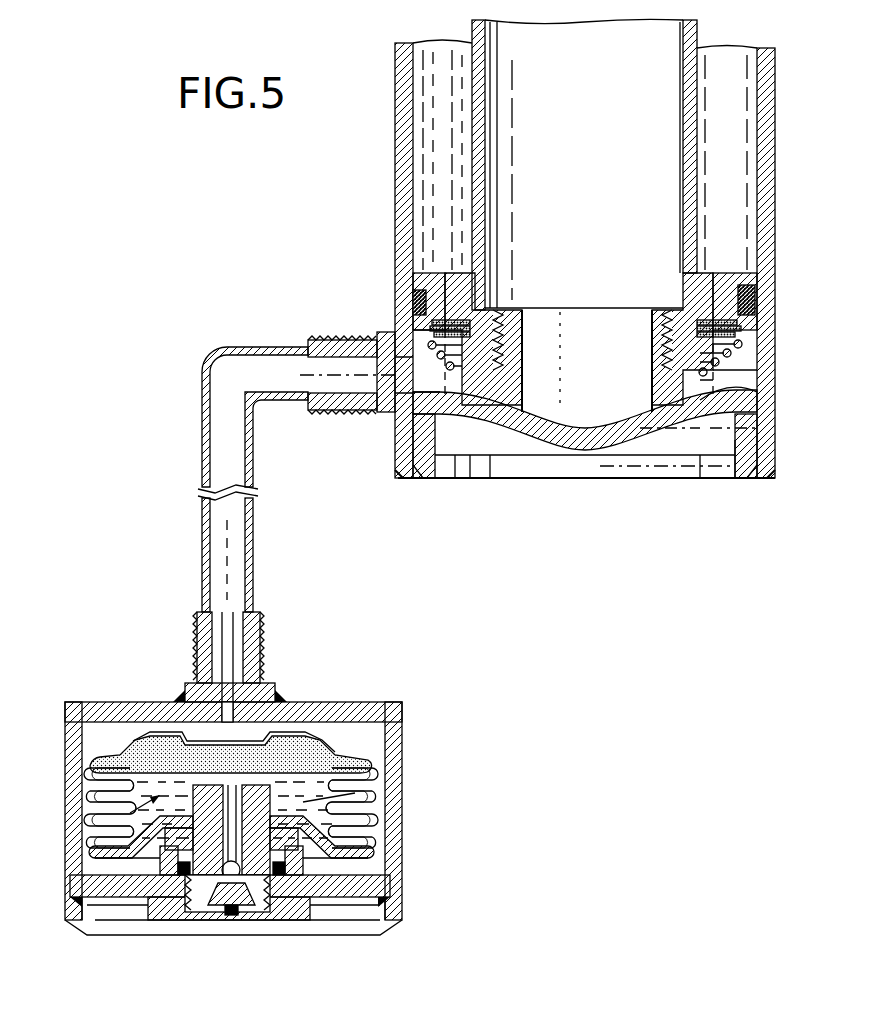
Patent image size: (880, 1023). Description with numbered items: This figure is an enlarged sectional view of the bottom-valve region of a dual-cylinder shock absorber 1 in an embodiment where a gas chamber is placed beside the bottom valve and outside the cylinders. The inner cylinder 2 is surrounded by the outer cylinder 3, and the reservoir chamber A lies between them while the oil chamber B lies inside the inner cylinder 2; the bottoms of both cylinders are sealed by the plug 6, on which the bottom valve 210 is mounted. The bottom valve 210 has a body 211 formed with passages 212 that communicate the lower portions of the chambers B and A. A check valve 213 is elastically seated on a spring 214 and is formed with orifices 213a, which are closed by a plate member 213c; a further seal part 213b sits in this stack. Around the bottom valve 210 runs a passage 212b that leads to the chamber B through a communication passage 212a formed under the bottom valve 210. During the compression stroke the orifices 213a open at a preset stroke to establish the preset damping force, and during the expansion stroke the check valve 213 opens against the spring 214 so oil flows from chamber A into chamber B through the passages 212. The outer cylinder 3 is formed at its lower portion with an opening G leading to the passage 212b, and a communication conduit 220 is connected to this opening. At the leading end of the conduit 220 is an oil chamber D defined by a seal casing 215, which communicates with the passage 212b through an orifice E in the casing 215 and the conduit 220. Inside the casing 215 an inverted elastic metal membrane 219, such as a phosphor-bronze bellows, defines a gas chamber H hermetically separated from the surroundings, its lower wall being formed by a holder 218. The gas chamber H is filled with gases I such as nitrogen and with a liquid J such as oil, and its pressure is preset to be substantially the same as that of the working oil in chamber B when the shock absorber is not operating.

The shock absorber 1 is at (391, 75).
The inner cylinder 2 is at (478, 118).
The outer cylinder 3 is at (402, 142).
The plug 6 is at (580, 447).
The bottom valve 210 is at (505, 300).
The body 211 is at (500, 340).
The passages 212 is at (462, 272).
The communication passage 212a is at (652, 424).
The passage 212b is at (730, 378).
The check valve 213 is at (458, 348).
The orifices 213a is at (440, 375).
The seal ring 213b is at (418, 328).
The plate member 213c is at (440, 300).
The spring 214 is at (776, 428).
The seal casing 215 is at (392, 832).
The holder 218 is at (346, 866).
The inverted elastic metal membrane 219 is at (96, 778).
The communication conduit 220 is at (250, 346).
The reservoir chamber A is at (733, 98).
The oil chamber B is at (591, 86).
The oil chamber D is at (372, 868).
The orifice E is at (235, 708).
The opening G is at (386, 334).
The gas chamber H is at (88, 827).
The gases I is at (150, 748).
The liquid J is at (370, 792).